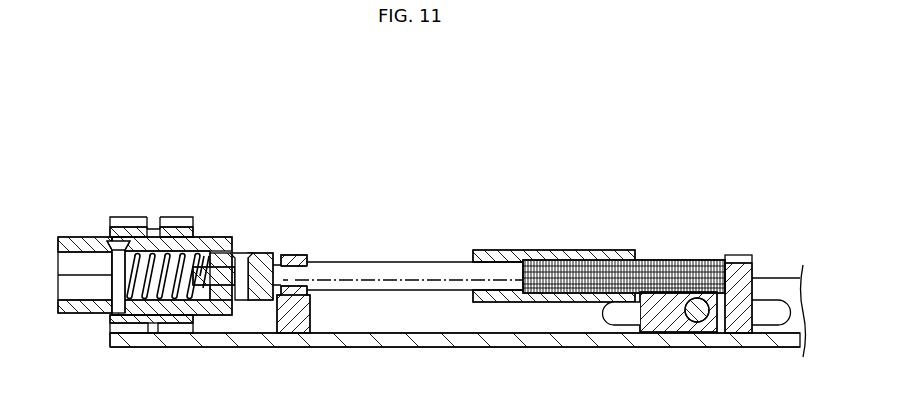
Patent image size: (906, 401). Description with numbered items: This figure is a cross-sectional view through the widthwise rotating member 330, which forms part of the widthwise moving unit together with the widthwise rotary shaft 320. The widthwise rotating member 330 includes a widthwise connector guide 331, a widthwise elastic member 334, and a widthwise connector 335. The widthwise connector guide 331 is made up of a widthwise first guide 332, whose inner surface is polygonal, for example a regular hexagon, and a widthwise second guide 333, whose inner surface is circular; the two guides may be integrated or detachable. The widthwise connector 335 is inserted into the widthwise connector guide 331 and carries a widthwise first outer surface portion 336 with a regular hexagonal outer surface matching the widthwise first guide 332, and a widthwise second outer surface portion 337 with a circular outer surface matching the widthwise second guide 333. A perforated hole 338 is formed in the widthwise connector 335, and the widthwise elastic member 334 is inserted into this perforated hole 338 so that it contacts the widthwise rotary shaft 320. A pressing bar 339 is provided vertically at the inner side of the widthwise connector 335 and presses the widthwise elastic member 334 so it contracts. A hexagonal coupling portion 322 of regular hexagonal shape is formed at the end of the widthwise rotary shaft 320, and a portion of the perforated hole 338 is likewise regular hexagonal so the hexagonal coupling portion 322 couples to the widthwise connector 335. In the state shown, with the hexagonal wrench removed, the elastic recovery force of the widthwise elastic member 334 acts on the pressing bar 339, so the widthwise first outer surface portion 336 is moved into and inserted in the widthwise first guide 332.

The widthwise rotating member 330 is at (101, 115).
The widthwise connector guide 331 is at (149, 170).
The widthwise first guide 332 is at (177, 217).
The widthwise second guide 333 is at (126, 217).
The widthwise elastic member 334 is at (150, 306).
The widthwise connector 335 is at (68, 188).
The widthwise first outer surface portion 336 is at (222, 237).
The widthwise second outer surface portion 337 is at (74, 237).
The perforated hole 338 is at (72, 264).
The pressing bar 339 is at (118, 294).
The hexagonal coupling portion 322 is at (263, 253).
The widthwise rotary shaft 320 is at (436, 262).